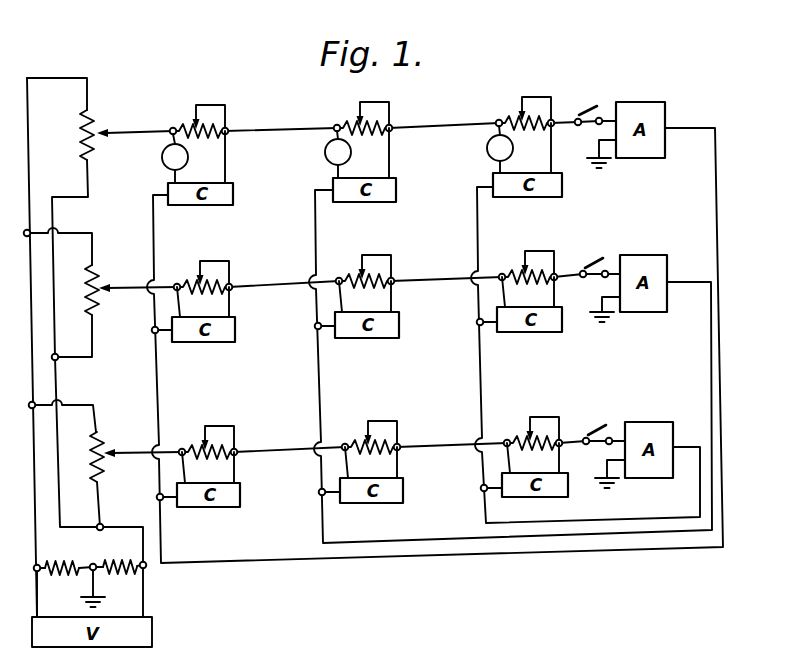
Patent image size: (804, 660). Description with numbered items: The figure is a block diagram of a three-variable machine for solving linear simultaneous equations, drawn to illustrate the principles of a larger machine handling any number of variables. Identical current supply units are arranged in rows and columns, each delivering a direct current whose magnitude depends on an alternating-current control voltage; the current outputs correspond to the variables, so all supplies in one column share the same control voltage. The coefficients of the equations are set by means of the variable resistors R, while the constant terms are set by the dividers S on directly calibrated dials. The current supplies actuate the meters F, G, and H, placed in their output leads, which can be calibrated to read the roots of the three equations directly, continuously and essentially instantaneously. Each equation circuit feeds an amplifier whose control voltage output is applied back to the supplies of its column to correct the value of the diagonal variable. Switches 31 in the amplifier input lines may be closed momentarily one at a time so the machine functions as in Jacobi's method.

The switch 31 is at (594, 108).
The divider S is at (107, 131).
The variable resistor R is at (204, 438).
The meter F is at (162, 157).
The meter G is at (325, 152).
The meter H is at (487, 148).